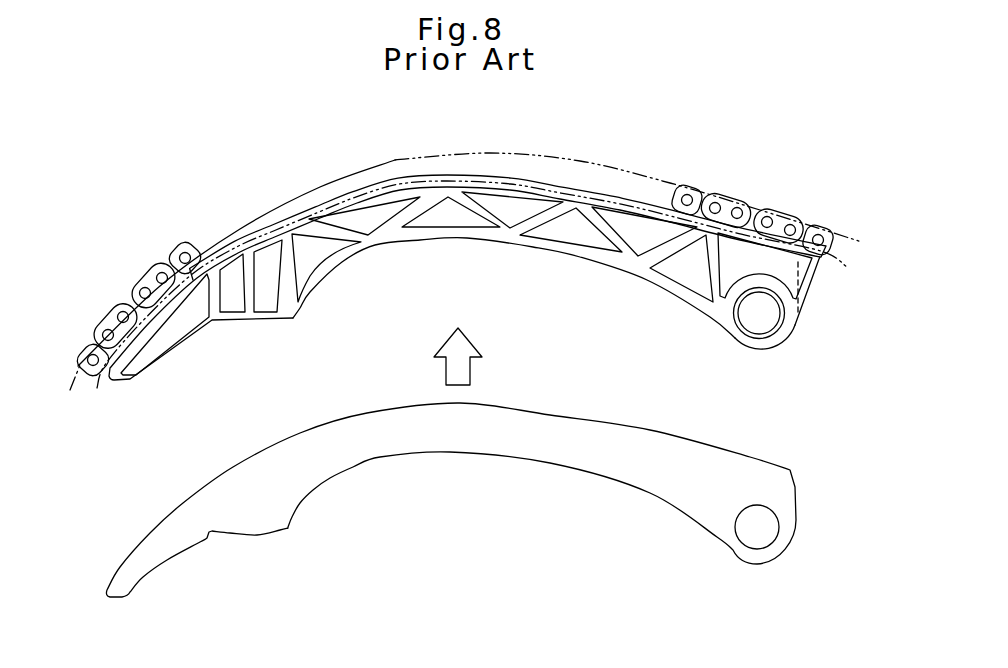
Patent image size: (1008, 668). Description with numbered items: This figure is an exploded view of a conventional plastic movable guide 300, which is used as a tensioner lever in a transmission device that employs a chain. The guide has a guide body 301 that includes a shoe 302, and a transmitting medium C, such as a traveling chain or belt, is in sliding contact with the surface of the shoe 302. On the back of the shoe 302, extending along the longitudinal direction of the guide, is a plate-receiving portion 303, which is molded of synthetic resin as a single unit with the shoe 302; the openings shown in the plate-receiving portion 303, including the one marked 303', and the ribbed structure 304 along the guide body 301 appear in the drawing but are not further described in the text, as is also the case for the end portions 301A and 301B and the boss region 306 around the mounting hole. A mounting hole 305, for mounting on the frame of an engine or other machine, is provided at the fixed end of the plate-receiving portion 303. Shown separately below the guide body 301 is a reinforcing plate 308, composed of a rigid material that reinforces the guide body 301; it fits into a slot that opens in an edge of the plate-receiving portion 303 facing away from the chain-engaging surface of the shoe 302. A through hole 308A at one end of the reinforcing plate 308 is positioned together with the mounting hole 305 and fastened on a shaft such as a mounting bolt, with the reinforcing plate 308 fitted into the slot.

The plastic movable guide 300 is at (489, 147).
The guide body 301 is at (813, 297).
The one end portion of guide body 301A is at (703, 326).
The other end portion of guide body 301B is at (267, 332).
The shoe 302 is at (407, 177).
The plate-receiving portion 303 is at (414, 178).
The openings (lightening holes) in guide body 303' is at (604, 254).
The reinforcing rib 304 is at (339, 266).
The mounting hole 305 is at (748, 330).
The boss 306 is at (792, 328).
The reinforcing plate 308 is at (525, 443).
The through hole 308A is at (745, 546).
The transmitting medium C is at (147, 282).